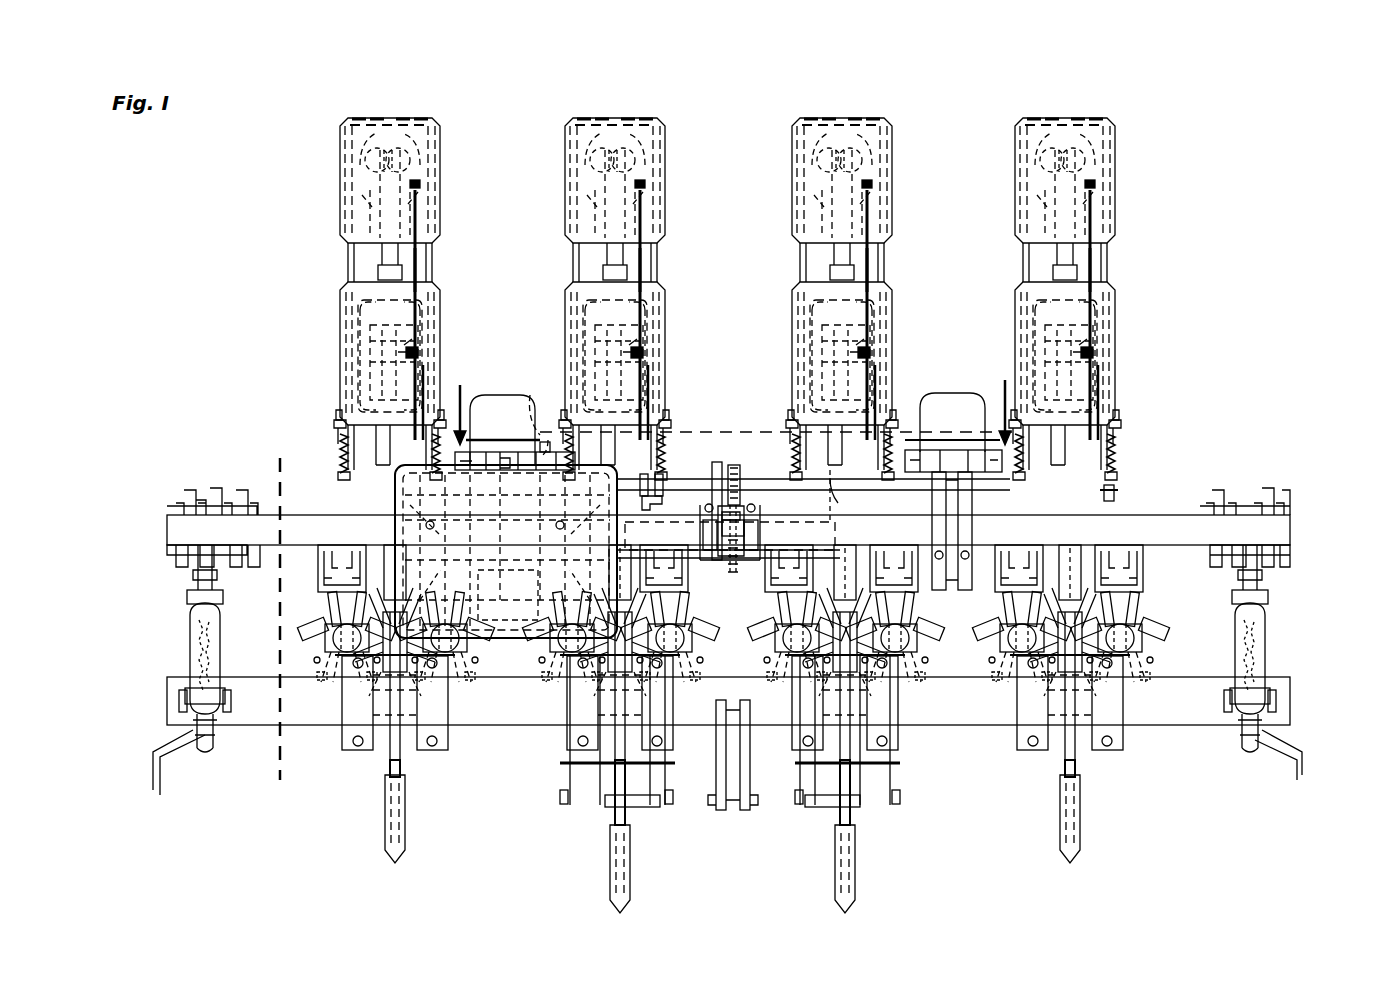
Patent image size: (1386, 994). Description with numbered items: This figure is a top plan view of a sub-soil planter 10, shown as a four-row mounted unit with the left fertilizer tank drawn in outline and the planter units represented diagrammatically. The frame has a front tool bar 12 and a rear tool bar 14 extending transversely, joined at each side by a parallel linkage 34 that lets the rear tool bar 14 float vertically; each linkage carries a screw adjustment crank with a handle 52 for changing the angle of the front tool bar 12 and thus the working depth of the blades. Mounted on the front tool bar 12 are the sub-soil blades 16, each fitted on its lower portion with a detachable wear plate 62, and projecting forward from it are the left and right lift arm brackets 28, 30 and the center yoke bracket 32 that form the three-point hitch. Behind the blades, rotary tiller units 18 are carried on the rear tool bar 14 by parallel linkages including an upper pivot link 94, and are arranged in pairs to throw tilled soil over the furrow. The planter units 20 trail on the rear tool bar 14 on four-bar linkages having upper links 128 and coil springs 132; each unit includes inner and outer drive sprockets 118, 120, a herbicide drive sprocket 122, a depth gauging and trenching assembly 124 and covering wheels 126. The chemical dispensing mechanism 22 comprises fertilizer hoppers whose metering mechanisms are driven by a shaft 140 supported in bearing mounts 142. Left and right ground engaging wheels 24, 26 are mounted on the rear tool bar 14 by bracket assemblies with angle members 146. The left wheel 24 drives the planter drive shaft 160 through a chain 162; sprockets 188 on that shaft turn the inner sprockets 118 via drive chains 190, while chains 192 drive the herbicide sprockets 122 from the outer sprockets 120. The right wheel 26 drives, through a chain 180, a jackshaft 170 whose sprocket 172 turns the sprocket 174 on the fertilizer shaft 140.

The sub-soil planter 10 is at (1245, 355).
The front tool bar 12 is at (167, 692).
The rear tool bar 14 is at (167, 518).
The sub-soil blade 16 is at (400, 790).
The rotary tiller unit 18 is at (306, 651).
The planter unit 20 is at (312, 295).
The chemical dispensing mechanism 22 is at (378, 493).
The left ground engaging wheel 24 is at (950, 396).
The right ground engaging wheel 26 is at (488, 392).
The left lift arm bracket 28 is at (820, 805).
The right lift arm bracket 30 is at (640, 810).
The center yoke bracket 32 is at (737, 810).
The parallel linkage 34 is at (172, 630).
The handle 52 is at (155, 785).
The wear plate 62 is at (408, 830).
The upper pivot link 94 is at (950, 576).
The inner drive sprocket 118 is at (415, 350).
The outer drive sprocket 120 is at (415, 344).
The herbicide drive sprocket 122 is at (418, 170).
The depth gauging and trenching assembly 124 is at (340, 350).
The covering wheels 126 is at (408, 145).
The upper links 128 is at (1116, 488).
The coil spring 132 is at (340, 459).
The shaft 140 is at (680, 560).
The bearing mount 142 is at (740, 506).
The angle members 146 is at (970, 560).
The planter drive shaft 160 is at (845, 495).
The chain 162 is at (925, 448).
The jackshaft 170 is at (692, 477).
The sprocket 172 is at (736, 470).
The sprocket 174 is at (740, 580).
The chain 180 is at (547, 435).
The sprockets 188 is at (344, 458).
The drive chains 190 is at (422, 378).
The chains 192 is at (420, 264).